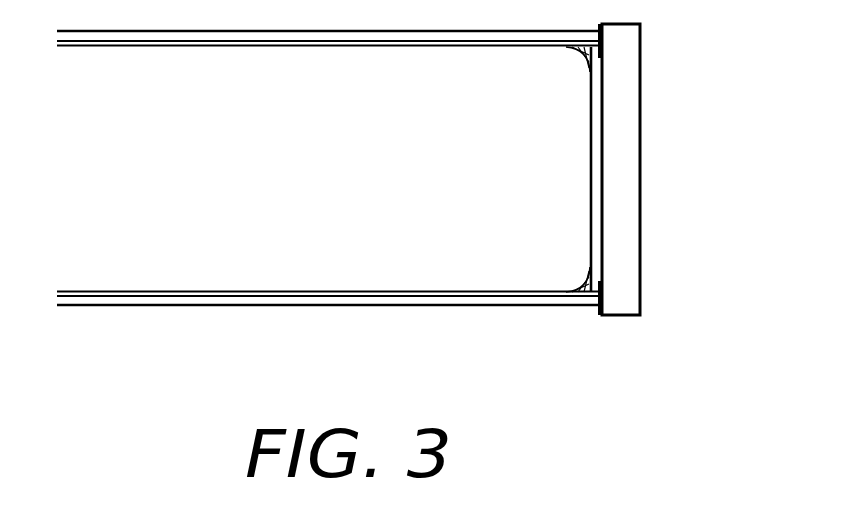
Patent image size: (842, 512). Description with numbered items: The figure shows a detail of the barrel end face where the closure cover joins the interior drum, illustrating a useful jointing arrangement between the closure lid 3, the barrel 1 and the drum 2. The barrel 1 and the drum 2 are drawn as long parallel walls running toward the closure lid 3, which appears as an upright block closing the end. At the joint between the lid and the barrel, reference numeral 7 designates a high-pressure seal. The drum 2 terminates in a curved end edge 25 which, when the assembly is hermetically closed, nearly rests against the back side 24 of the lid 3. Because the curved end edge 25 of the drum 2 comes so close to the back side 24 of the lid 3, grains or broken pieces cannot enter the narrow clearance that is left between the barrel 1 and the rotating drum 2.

The barrel 1 is at (152, 292).
The drum 2 is at (248, 291).
The closure lid 3 is at (628, 183).
The high-pressure seal 7 is at (603, 288).
The back side of lid 24 is at (590, 167).
The curved end edge of drum 25 is at (583, 47).